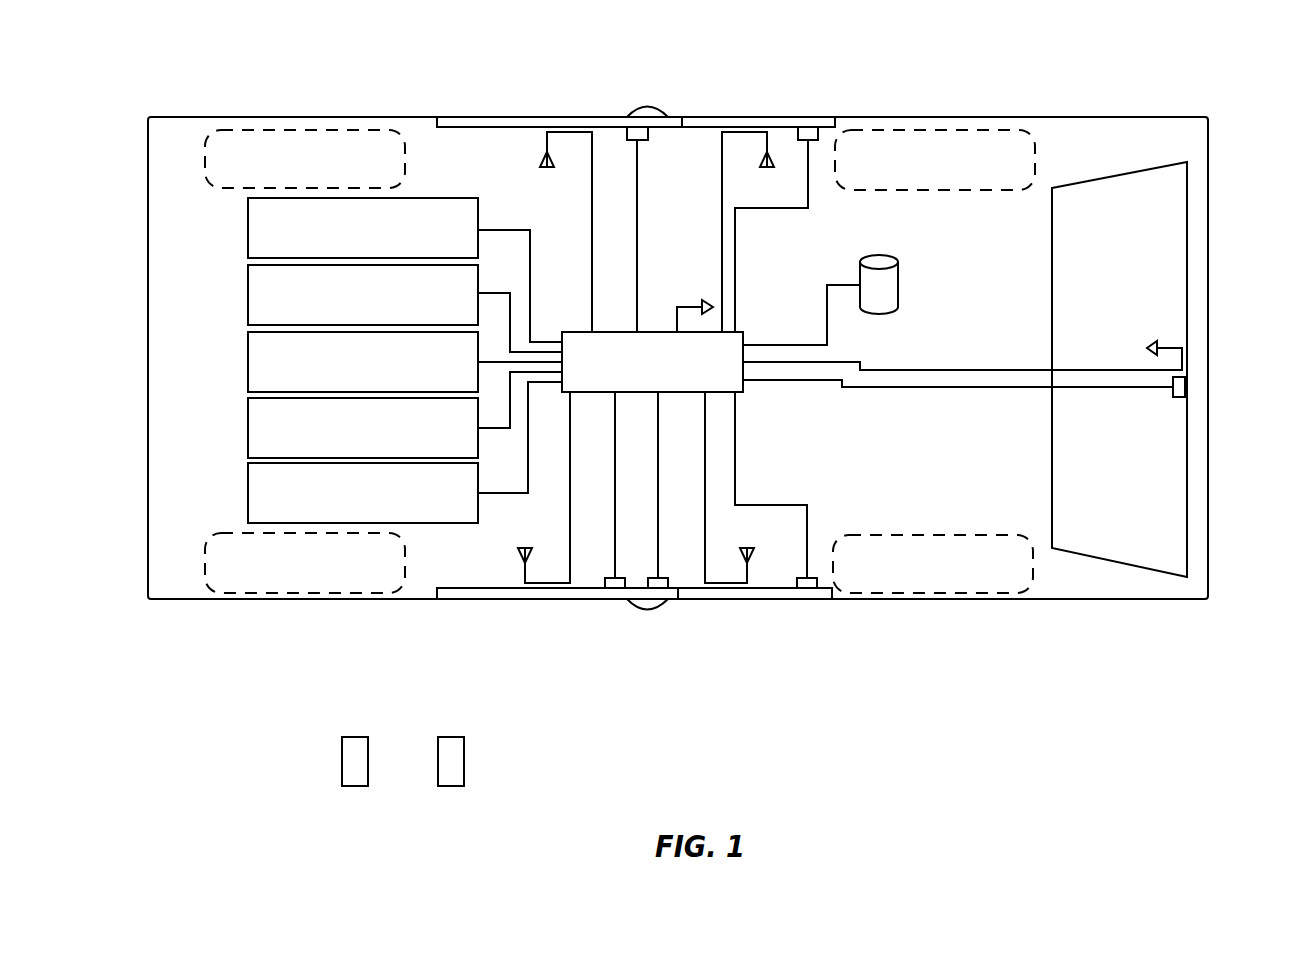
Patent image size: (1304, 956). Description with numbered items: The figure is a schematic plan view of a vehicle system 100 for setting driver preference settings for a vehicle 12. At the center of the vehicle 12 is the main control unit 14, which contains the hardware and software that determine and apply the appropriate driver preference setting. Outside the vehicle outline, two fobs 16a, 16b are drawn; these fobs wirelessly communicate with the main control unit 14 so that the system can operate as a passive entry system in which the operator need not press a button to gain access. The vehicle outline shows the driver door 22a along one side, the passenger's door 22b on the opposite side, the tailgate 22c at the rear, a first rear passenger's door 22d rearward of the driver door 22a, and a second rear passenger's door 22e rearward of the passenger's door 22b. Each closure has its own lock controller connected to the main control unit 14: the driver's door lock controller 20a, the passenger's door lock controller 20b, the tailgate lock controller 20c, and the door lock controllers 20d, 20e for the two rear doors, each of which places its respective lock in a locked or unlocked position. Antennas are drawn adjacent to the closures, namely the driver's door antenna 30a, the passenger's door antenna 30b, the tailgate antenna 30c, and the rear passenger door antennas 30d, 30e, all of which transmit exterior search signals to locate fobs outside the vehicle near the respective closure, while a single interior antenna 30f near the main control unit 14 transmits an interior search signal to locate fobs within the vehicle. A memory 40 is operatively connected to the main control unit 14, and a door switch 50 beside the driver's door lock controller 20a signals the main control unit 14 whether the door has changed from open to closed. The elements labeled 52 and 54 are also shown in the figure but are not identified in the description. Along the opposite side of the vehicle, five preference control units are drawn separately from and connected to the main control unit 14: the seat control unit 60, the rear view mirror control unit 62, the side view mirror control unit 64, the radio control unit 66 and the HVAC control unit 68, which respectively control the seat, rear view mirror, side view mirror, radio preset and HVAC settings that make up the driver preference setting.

The vehicle system 100 is at (1142, 68).
The vehicle 12 is at (1012, 116).
The main control unit 14 is at (652, 331).
The fob 16a is at (355, 737).
The fob 16b is at (452, 737).
The driver's door lock controller 20a is at (661, 577).
The passenger's door lock controller 20b is at (641, 141).
The tailgate lock controller 20c is at (1186, 387).
The door lock controller 20d is at (808, 599).
The door lock controller 20e is at (808, 127).
The driver door 22a is at (586, 600).
The passenger's door 22b is at (549, 117).
The tailgate 22c is at (1168, 510).
The first rear passenger's door 22d is at (740, 600).
The second rear passenger's door 22e is at (708, 117).
The driver's door antenna 30a is at (527, 572).
The passenger's door antenna 30b is at (544, 145).
The tailgate antenna 30c is at (1160, 344).
The rear passenger door antenna 30d is at (750, 572).
The rear passenger door antenna 30e is at (765, 152).
The antenna 30f is at (693, 305).
The memory 40 is at (897, 280).
The door switch 50 is at (619, 577).
The vehicle interior 52 is at (760, 459).
The bus connector 54 is at (646, 609).
The seat control unit 60 is at (248, 234).
The rear view mirror control unit 62 is at (248, 300).
The side view mirror control unit 64 is at (248, 367).
The radio control unit 66 is at (248, 433).
The HVAC control unit 68 is at (248, 498).